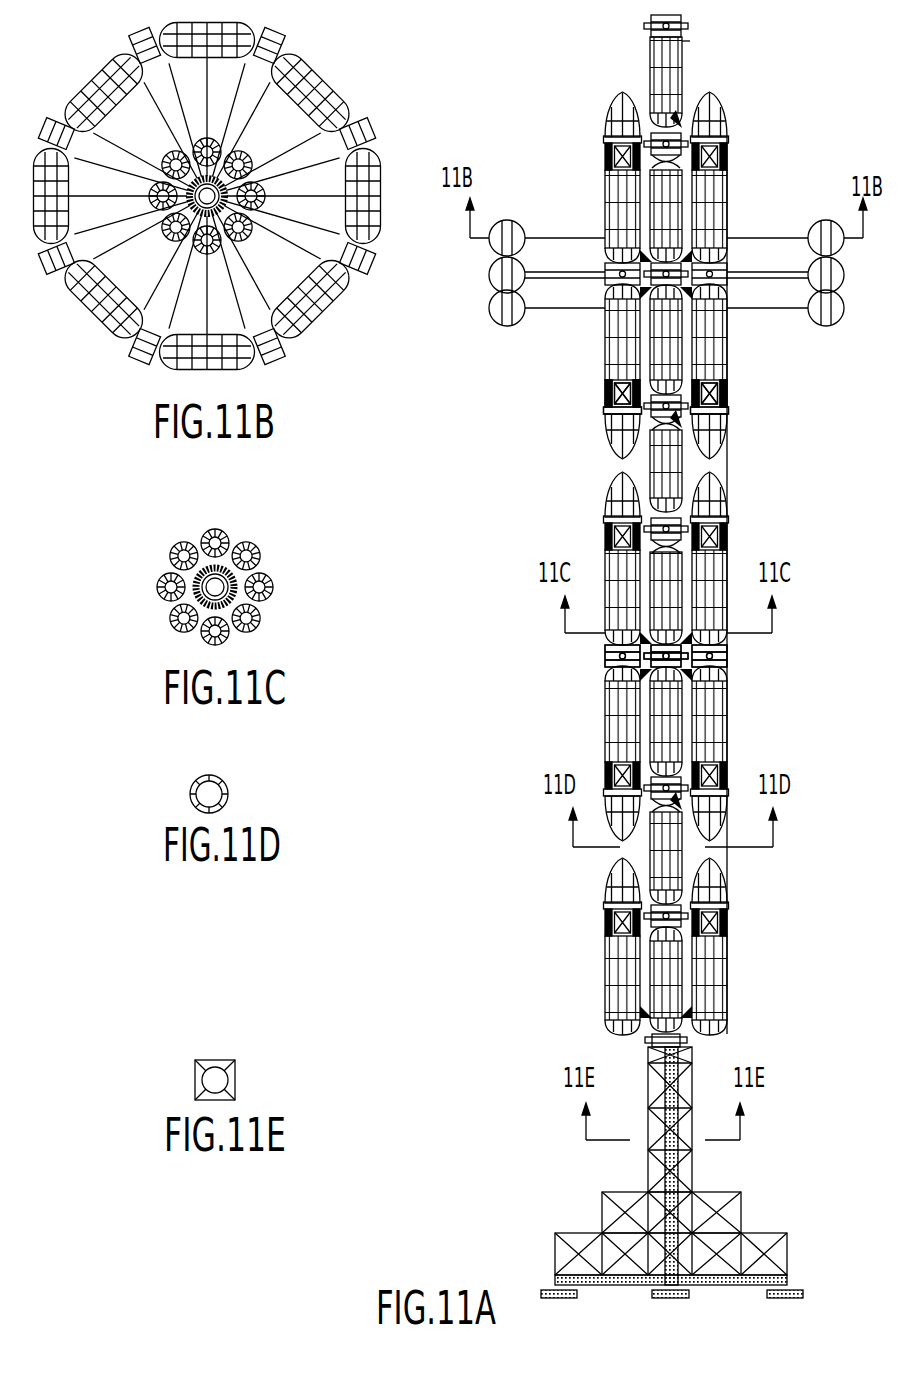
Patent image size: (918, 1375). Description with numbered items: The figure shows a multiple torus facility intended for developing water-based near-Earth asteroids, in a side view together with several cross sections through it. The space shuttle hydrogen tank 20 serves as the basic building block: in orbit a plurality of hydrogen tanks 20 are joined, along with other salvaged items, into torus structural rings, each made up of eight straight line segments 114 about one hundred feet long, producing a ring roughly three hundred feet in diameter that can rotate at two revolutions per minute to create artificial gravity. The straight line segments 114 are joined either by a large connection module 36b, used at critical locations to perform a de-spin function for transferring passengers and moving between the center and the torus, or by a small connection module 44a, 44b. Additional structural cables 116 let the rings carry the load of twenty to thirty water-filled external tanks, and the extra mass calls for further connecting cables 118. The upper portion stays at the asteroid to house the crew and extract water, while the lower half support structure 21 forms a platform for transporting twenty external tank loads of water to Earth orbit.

In FIG. 11B, the hydrogen tank 20 is at (340, 80).
In FIG. 11C, the hydrogen tank 20 is at (263, 548).
In FIG. 11D, the hydrogen tank 20 is at (228, 785).
In FIG. 11A, the hydrogen tank 20 is at (730, 978).
In FIG. 11E, the lower half support structure 21 is at (235, 1062).
In FIG. 11A, the lower half support structure 21 is at (693, 1063).
In FIG. 11B, the straight line segment 114 is at (343, 303).
In FIG. 11A, the straight line segment 114 is at (823, 220).
In FIG. 11B, the structural cable 116 is at (268, 307).
In FIG. 11A, the connecting cable 118 is at (728, 443).
In FIG. 11B, the large connection module 36b is at (349, 357).
In FIG. 11B, the small connection module 44a is at (349, 357).
In FIG. 11B, the small connection module 44b is at (283, 355).